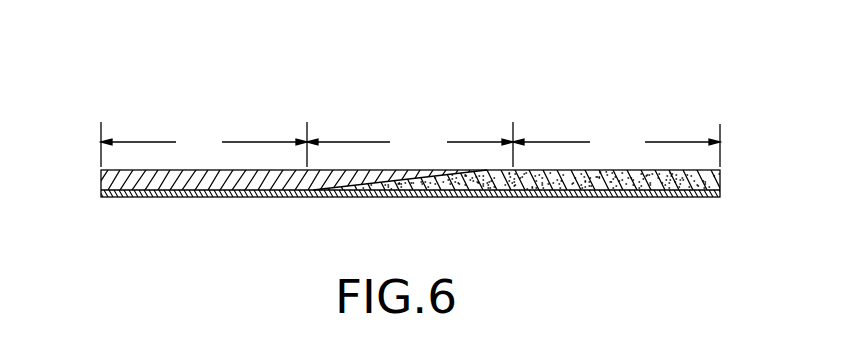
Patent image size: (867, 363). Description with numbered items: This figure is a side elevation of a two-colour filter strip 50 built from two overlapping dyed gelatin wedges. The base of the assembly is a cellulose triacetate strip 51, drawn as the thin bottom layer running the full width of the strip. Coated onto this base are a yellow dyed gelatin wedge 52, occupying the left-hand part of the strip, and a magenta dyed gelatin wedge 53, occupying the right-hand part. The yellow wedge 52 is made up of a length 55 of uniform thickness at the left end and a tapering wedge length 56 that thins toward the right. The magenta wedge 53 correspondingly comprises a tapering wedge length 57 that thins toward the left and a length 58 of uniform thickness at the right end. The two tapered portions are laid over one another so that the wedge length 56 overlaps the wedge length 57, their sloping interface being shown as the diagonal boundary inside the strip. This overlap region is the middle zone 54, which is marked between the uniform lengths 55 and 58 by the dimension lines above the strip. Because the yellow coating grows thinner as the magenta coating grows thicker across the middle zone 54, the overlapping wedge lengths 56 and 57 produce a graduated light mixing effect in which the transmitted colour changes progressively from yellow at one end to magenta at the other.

The two-colour filter strip 50 is at (600, 85).
The cellulose triacetate strip 51 is at (188, 197).
The yellow dyed gelatin wedge 52 is at (108, 178).
The magenta dyed gelatin wedge 53 is at (721, 178).
The middle zone 54 is at (410, 144).
The length of uniform thickness 55 is at (204, 144).
The wedge length 56 is at (413, 178).
The wedge length 57 is at (473, 191).
The length of uniform length 58 is at (616, 145).